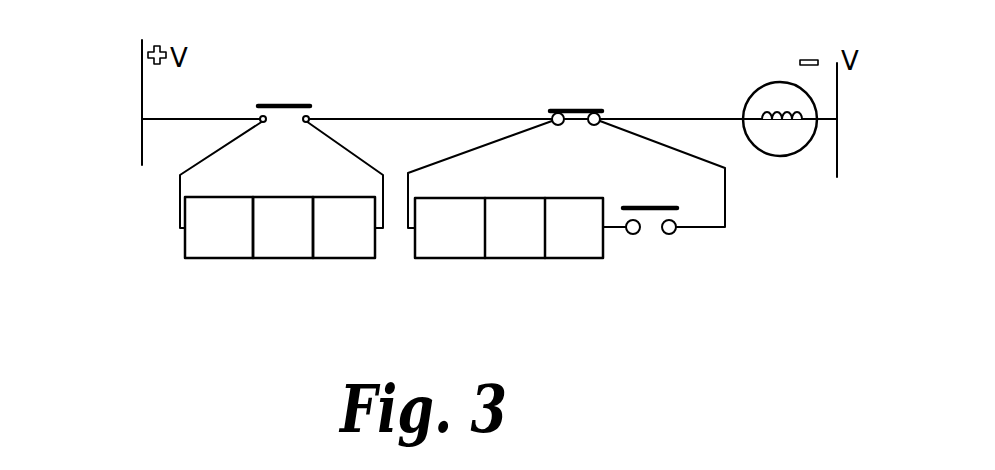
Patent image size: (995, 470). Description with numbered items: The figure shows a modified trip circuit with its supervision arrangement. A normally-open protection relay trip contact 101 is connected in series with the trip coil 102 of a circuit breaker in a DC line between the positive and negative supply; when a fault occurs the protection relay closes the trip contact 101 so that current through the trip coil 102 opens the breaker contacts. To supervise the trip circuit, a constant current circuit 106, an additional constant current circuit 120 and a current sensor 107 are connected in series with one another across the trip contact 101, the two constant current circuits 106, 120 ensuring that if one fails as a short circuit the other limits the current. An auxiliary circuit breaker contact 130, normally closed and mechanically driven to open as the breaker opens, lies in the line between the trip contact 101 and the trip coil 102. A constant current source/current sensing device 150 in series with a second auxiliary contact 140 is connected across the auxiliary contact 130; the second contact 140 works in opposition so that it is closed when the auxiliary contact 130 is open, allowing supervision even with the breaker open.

The protection relay trip contact 101 is at (290, 104).
The trip coil 102 is at (770, 82).
The constant current circuit 106 is at (220, 260).
The current sensor 107 is at (350, 260).
The additional constant current circuit 120 is at (283, 260).
The auxiliary circuit breaker contact 130 is at (573, 109).
The second auxiliary contact 140 is at (672, 234).
The constant current source/current sensing device 150 is at (557, 260).